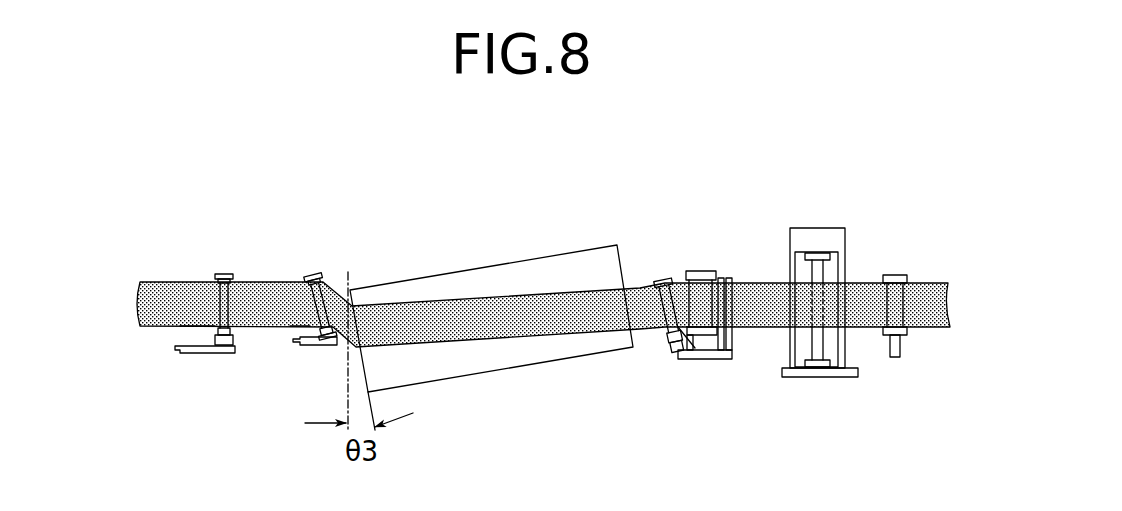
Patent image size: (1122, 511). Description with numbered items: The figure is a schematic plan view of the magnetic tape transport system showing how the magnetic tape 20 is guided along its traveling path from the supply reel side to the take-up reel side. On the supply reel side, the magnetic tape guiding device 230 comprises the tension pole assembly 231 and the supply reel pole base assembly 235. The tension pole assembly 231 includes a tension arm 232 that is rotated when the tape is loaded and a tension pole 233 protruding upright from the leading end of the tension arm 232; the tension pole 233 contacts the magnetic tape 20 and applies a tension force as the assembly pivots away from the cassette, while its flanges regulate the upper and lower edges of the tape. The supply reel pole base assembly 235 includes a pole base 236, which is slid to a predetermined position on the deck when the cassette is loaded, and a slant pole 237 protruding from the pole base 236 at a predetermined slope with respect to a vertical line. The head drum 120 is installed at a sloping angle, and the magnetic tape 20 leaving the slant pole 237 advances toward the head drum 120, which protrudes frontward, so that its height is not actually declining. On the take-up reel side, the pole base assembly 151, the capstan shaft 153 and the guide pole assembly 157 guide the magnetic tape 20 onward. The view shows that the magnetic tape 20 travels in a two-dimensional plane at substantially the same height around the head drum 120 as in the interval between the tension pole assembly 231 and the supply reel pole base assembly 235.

The magnetic tape 20 is at (760, 315).
The head drum 120 is at (475, 278).
The pole base assembly 151 is at (677, 255).
The capstan shaft 153 is at (813, 272).
The guide pole assembly 157 is at (896, 255).
The magnetic tape guiding device 230 is at (333, 139).
The tension pole assembly 231 is at (213, 258).
The tension arm 232 is at (176, 352).
The tension pole 233 is at (197, 306).
The supply reel pole base assembly 235 is at (305, 258).
The pole base 236 is at (317, 350).
The slant pole 237 is at (312, 310).